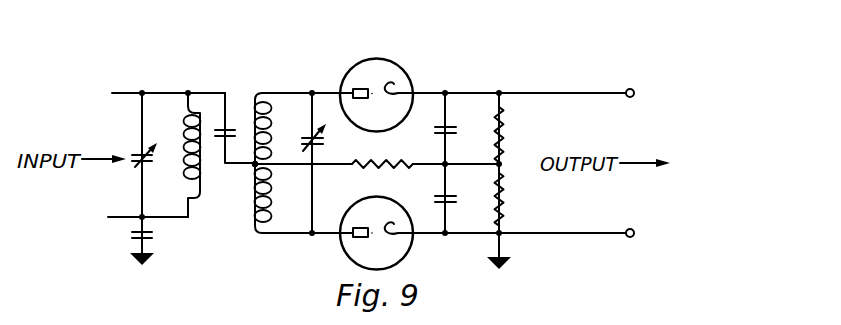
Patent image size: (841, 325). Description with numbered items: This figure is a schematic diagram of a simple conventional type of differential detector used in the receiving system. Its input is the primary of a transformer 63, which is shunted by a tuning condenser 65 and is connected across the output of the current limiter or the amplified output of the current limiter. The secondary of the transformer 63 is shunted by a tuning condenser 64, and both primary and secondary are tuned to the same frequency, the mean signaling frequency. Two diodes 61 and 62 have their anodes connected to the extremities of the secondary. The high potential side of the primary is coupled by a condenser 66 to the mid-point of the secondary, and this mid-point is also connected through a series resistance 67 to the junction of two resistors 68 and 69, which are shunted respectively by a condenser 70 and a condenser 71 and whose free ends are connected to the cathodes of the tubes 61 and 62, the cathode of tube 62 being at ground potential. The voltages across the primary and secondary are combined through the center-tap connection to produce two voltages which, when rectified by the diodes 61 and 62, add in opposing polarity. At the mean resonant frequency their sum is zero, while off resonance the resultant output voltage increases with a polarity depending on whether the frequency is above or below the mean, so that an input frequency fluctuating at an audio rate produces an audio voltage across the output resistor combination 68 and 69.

The diode 61 is at (377, 68).
The diode 62 is at (403, 243).
The transformer 63 is at (196, 128).
The tuning condenser 64 is at (307, 136).
The tuning condenser 65 is at (138, 150).
The condenser 66 is at (222, 138).
The series resistance 67 is at (398, 163).
The resistor 68 is at (501, 110).
The resistor 69 is at (505, 198).
The condenser 70 is at (444, 122).
The condenser 71 is at (452, 204).